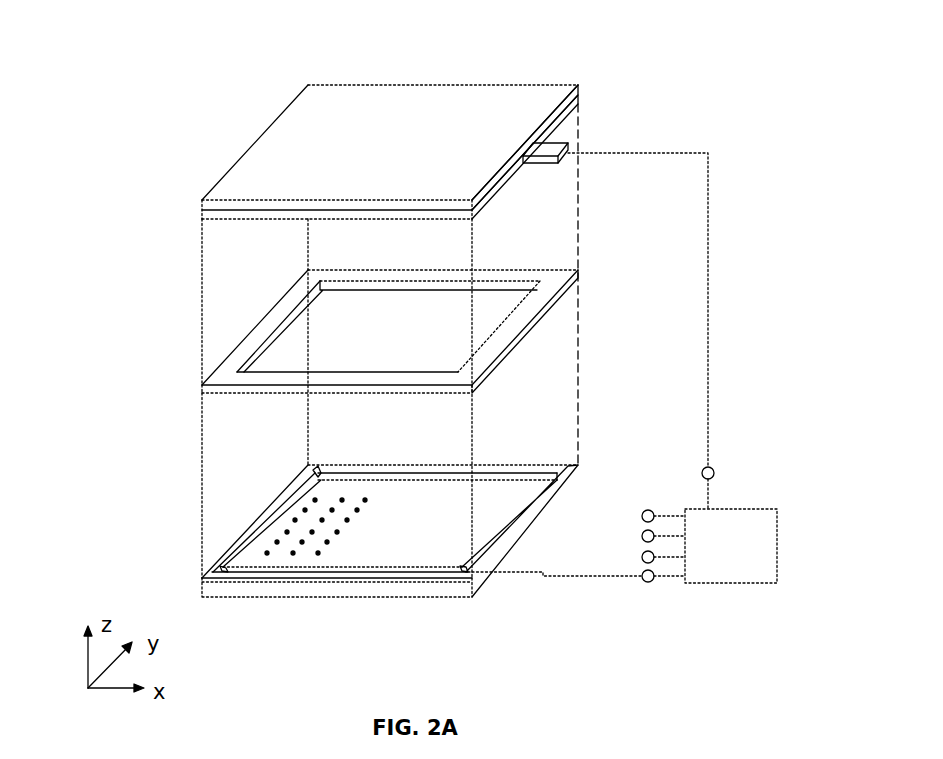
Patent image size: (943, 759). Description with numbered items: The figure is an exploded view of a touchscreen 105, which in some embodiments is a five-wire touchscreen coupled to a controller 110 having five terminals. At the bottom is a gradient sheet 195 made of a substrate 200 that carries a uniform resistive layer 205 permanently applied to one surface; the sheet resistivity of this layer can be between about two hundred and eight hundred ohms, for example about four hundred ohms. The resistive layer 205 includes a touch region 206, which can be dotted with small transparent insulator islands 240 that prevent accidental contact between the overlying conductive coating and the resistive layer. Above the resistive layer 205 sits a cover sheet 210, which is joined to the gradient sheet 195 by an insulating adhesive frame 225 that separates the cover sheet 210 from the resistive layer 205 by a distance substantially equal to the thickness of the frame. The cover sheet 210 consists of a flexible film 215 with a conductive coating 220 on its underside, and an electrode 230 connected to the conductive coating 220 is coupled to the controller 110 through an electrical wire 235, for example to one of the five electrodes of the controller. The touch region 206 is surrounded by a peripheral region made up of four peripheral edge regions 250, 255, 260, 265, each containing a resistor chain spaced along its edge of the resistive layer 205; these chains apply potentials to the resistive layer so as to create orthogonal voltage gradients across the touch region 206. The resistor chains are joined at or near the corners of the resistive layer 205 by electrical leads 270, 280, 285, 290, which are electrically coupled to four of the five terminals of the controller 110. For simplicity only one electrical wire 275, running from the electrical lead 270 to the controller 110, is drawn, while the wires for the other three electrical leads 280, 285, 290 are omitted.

The touchscreen 105 is at (231, 73).
The controller 110 is at (712, 560).
The gradient sheet 195 is at (497, 462).
The substrate 200 is at (253, 594).
The resistive layer 205 is at (376, 537).
The touch region 206 is at (435, 547).
The cover sheet 210 is at (348, 155).
The flexible film 215 is at (578, 92).
The conductive coating 220 is at (580, 104).
The insulating adhesive frame 225 is at (278, 317).
The electrode 230 is at (560, 143).
The electrical wire 235 is at (710, 235).
The transparent insulator islands 240 is at (305, 510).
The peripheral edge region 250 is at (385, 473).
The peripheral edge region 255 is at (268, 527).
The peripheral edge region 260 is at (363, 572).
The peripheral edge region 265 is at (523, 505).
The electrical lead 270 is at (460, 574).
The electrical wire 275 is at (590, 577).
The electrical lead 280 is at (541, 480).
The electrical lead 285 is at (316, 473).
The electrical lead 290 is at (215, 569).